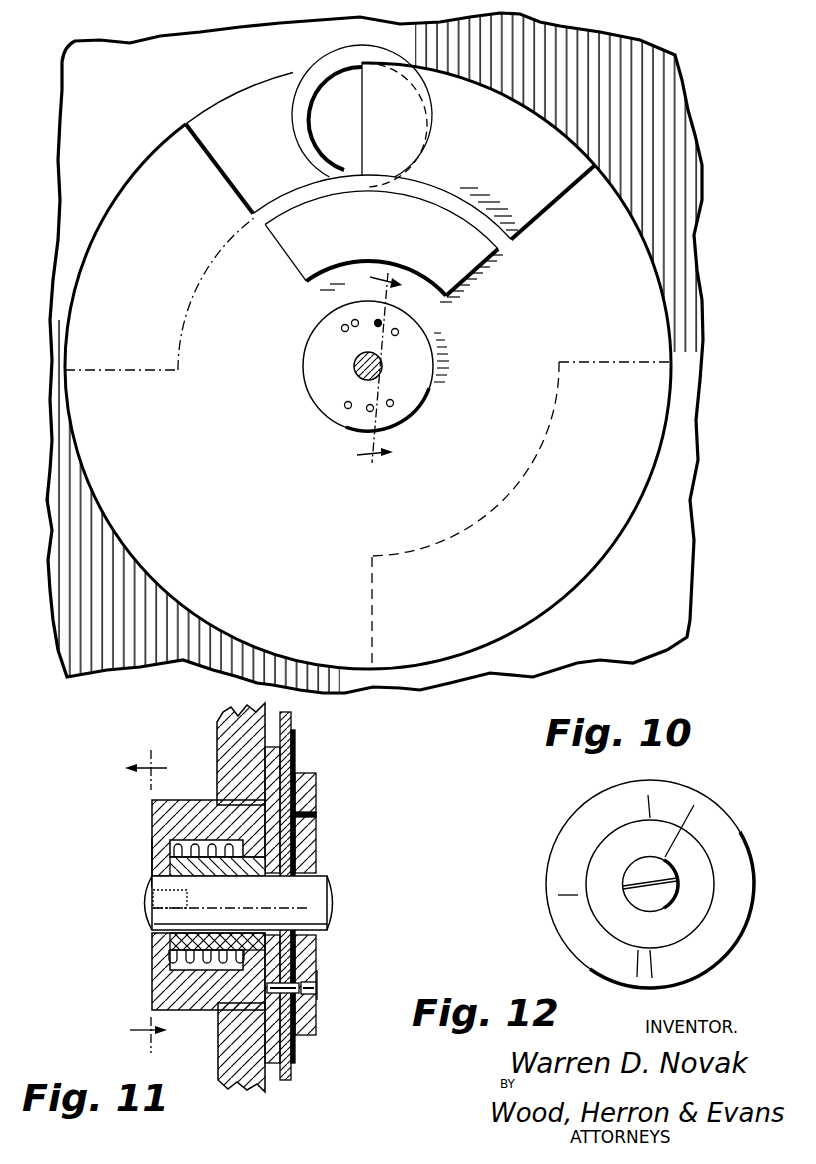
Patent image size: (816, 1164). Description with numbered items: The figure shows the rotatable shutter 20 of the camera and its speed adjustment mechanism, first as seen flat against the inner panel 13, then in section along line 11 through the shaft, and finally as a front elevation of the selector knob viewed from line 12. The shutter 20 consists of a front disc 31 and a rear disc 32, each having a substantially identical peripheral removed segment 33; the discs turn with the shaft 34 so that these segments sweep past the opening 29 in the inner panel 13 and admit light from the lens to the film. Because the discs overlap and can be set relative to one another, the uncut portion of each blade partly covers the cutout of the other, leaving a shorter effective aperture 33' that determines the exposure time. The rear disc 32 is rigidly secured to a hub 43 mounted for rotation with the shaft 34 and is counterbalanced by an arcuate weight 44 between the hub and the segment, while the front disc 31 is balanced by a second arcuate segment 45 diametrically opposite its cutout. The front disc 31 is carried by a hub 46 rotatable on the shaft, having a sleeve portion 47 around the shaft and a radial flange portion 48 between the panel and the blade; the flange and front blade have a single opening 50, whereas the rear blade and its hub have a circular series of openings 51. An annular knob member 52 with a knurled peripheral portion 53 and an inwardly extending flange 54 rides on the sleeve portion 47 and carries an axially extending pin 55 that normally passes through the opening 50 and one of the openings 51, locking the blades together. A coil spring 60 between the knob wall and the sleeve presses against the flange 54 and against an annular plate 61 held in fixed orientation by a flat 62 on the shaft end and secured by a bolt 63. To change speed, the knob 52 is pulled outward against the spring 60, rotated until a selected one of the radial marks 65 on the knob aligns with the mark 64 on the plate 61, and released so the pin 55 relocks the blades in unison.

In FIG. 10, the inner panel 13 is at (375, 353).
In FIG. 10, the rotatable shutter 20 is at (674, 342).
In FIG. 10, the opening 29 is at (337, 93).
In FIG. 10, the front disc 31 is at (390, 151).
In FIG. 11, the front disc 31 is at (291, 718).
In FIG. 10, the rear disc 32 is at (368, 443).
In FIG. 11, the rear disc 32 is at (296, 740).
In FIG. 10, the removed segment 33 is at (553, 204).
In FIG. 10, the effective aperture 33' is at (219, 152).
In FIG. 10, the arcuate weight 44 is at (391, 245).
In FIG. 10, the second arcuate segment 45 is at (452, 535).
In FIG. 10, the hub 43 is at (425, 381).
In FIG. 11, the hub 43 is at (306, 800).
In FIG. 10, the shaft 34 is at (381, 364).
In FIG. 11, the shaft 34 is at (320, 893).
In FIG. 10, the openings 51 is at (345, 332).
In FIG. 11, the openings 51 is at (317, 815).
In FIG. 10, the section line 11— 11 is at (394, 372).
In FIG. 11, the section line 12— 12 is at (158, 899).
In FIG. 11, the radial flange portion 48 is at (273, 764).
In FIG. 11, the knurled peripheral portion 53 is at (190, 800).
In FIG. 12, the knurled peripheral portion 53 is at (546, 870).
In FIG. 11, the inwardly extending flange 54 is at (256, 849).
In FIG. 11, the hub 46 is at (246, 865).
In FIG. 11, the sleeve portion 47 is at (218, 877).
In FIG. 11, the coil spring 60 is at (170, 948).
In FIG. 11, the annular knob member 52 is at (163, 990).
In FIG. 12, the annular knob member 52 is at (707, 796).
In FIG. 11, the axially extending pin 55 is at (318, 975).
In FIG. 11, the annular plate 61 is at (158, 848).
In FIG. 12, the annular plate 61 is at (703, 905).
In FIG. 11, the flat 62 is at (152, 867).
In FIG. 11, the bolt 63 is at (146, 916).
In FIG. 12, the bolt 63 is at (660, 898).
In FIG. 12, the mark 64 is at (672, 846).
In FIG. 12, the radial marks 65 is at (711, 850).
In FIG. 11, the single opening 50 is at (273, 1066).